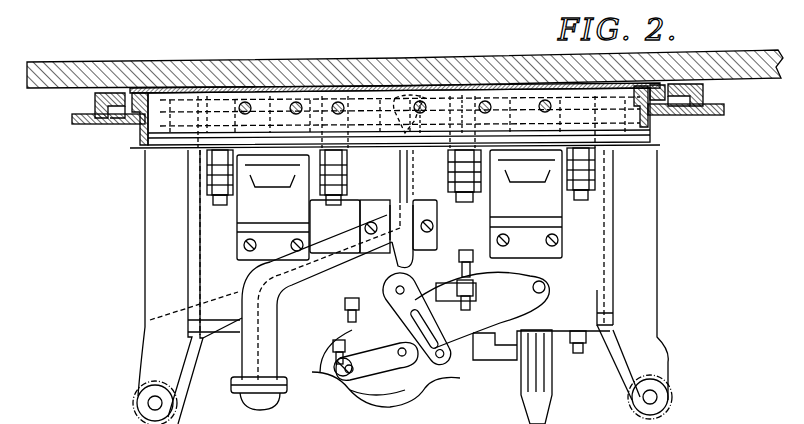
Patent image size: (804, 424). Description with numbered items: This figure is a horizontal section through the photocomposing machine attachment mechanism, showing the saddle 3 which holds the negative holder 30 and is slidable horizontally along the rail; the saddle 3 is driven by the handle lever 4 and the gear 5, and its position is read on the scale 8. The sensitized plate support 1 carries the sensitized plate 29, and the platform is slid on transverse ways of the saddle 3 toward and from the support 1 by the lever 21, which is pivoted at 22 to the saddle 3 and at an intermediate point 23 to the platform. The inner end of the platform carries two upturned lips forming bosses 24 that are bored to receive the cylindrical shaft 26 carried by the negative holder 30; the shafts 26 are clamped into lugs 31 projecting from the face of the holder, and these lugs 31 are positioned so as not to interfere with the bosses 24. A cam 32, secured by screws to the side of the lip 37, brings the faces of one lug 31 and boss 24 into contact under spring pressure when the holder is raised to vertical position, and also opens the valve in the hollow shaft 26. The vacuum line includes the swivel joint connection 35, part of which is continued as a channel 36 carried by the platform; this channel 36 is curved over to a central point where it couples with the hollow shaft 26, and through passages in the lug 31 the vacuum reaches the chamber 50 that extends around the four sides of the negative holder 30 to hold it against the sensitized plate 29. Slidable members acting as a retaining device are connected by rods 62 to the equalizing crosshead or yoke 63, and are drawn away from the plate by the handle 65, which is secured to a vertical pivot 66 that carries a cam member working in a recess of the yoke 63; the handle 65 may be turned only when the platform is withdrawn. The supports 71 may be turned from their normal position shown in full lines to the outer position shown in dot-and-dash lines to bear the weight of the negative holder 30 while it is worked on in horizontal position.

The support 1 is at (50, 86).
The saddle 3 is at (378, 32).
The handle lever 4 is at (315, 33).
The gear 5 is at (200, 37).
The scale 8 is at (500, 27).
The lever 21 is at (545, 289).
The pivot 22 is at (358, 366).
The intermediate point 23 is at (362, 392).
The bosses 24 is at (270, 187).
The cylindrical shaft 26 is at (420, 168).
The sensitized plate 29 is at (260, 88).
The negative holder 30 is at (98, 112).
The lugs 31 is at (205, 184).
The cam 32 is at (470, 58).
The swivel joint connection 35 is at (248, 402).
The channel 36 is at (262, 343).
The lip 37 is at (422, 54).
The chamber 50 is at (118, 140).
The rods 62 is at (474, 263).
The equalizing crosshead or yoke 63 is at (476, 285).
The handle 65 is at (438, 333).
The vertical pivot 66 is at (406, 290).
The supports 71 is at (146, 272).